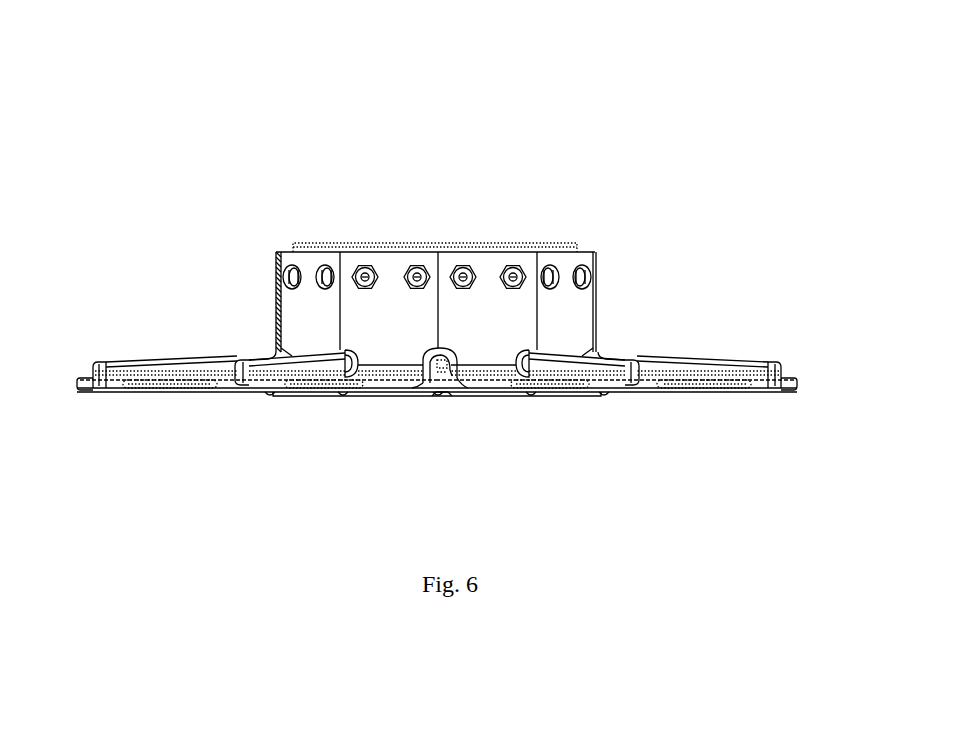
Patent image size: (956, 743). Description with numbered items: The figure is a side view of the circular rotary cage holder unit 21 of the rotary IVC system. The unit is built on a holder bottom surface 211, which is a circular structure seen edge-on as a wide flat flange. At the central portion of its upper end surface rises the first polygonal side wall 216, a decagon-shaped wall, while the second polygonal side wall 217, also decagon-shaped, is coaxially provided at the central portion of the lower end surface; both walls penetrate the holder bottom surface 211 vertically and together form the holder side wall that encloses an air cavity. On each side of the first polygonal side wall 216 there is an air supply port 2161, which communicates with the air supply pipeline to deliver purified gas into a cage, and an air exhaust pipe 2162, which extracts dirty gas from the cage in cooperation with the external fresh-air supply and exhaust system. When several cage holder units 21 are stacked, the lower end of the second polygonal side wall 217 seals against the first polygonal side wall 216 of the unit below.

The cage holder unit 21 is at (545, 80).
The holder bottom surface 211 is at (710, 375).
The first polygonal side wall 216 is at (487, 262).
The air supply port 2161 is at (355, 265).
The air exhaust pipe 2162 is at (412, 268).
The second polygonal side wall 217 is at (450, 393).